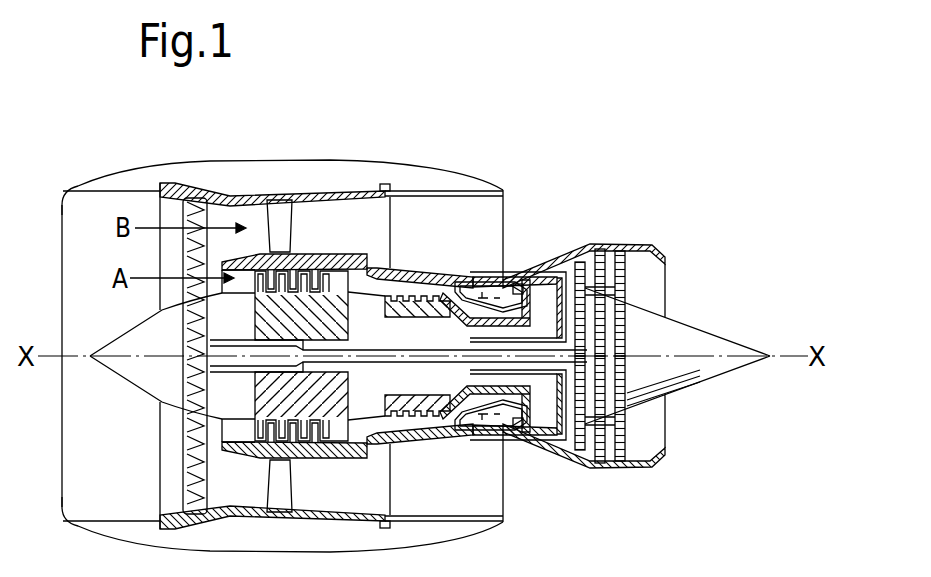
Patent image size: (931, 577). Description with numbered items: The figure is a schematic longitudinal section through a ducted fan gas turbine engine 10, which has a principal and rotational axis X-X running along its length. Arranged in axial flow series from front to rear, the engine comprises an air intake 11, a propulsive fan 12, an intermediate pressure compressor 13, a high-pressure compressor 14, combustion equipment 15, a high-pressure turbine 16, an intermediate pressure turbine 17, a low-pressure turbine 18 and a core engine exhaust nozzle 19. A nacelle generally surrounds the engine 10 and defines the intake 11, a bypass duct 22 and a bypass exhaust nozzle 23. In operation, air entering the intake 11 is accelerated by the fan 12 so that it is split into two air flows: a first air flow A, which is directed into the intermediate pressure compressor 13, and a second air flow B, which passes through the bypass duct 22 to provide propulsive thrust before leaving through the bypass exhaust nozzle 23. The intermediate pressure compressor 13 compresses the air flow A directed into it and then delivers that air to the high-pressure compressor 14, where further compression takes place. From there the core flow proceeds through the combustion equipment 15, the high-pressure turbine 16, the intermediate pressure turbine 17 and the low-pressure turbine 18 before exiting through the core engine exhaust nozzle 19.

The ducted fan gas turbine engine 10 is at (128, 143).
The air intake 11 is at (110, 194).
The propulsive fan 12 is at (187, 473).
The intermediate pressure compressor 13 is at (313, 450).
The high-pressure compressor 14 is at (415, 292).
The combustion equipment 15 is at (472, 411).
The high-pressure turbine 16 is at (517, 433).
The intermediate pressure turbine 17 is at (548, 264).
The low-pressure turbine 18 is at (570, 463).
The core engine exhaust nozzle 19 is at (658, 251).
The bypass duct 22 is at (473, 230).
The bypass exhaust nozzle 23 is at (503, 190).